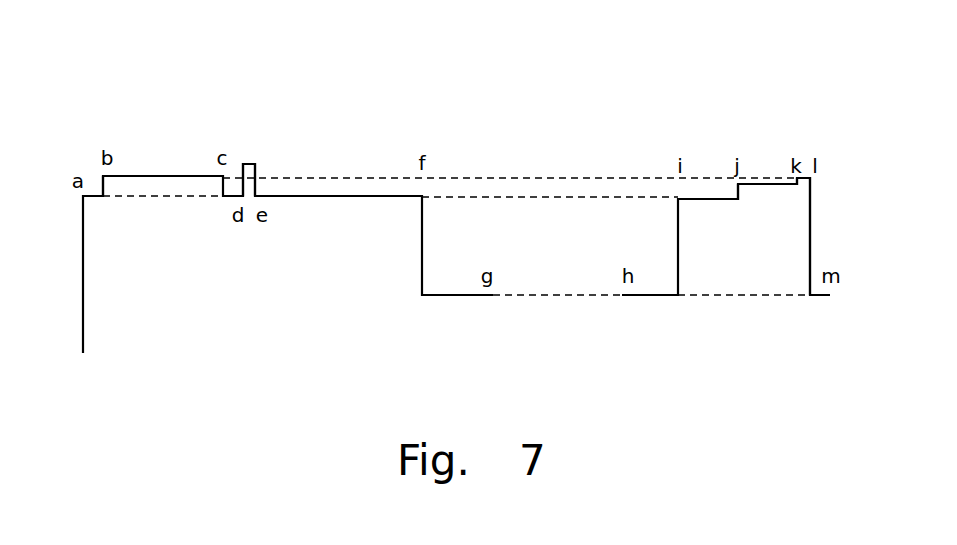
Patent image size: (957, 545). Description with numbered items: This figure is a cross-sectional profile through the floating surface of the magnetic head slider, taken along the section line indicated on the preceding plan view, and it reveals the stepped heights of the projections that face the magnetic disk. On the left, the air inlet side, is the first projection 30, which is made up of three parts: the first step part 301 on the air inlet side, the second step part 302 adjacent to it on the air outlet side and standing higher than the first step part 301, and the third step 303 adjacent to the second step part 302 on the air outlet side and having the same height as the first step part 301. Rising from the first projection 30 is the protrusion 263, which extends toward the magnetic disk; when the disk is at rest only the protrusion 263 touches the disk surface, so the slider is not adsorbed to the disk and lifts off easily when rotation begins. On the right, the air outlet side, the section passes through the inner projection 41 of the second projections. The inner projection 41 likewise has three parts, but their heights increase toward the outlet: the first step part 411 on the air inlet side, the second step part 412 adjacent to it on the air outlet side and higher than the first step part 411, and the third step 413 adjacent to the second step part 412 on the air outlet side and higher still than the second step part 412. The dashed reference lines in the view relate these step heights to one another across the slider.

The first projection 30 is at (378, 114).
The first step part 301 is at (96, 192).
The second step part 302 is at (162, 176).
The protrusion 263 is at (249, 164).
The third step 303 is at (318, 185).
The inner projection 41 is at (666, 129).
The first step part 411 is at (698, 199).
The second step part 412 is at (758, 184).
The third step 413 is at (807, 177).